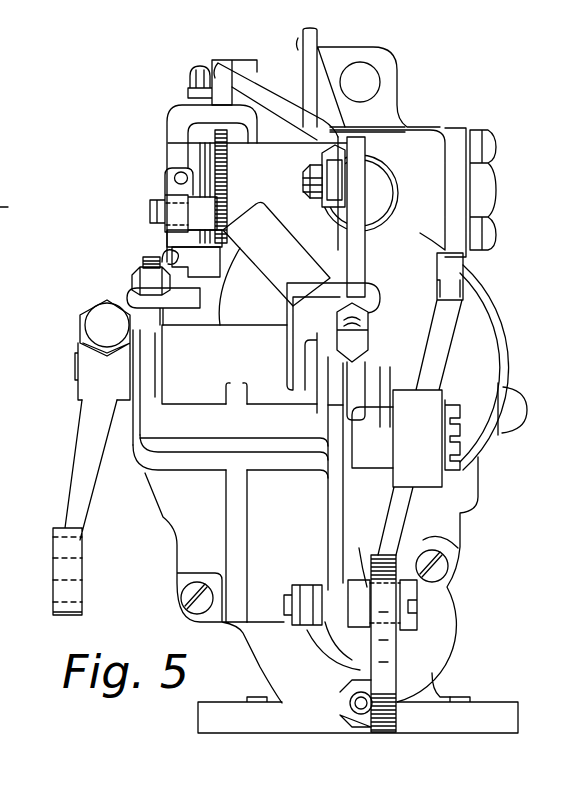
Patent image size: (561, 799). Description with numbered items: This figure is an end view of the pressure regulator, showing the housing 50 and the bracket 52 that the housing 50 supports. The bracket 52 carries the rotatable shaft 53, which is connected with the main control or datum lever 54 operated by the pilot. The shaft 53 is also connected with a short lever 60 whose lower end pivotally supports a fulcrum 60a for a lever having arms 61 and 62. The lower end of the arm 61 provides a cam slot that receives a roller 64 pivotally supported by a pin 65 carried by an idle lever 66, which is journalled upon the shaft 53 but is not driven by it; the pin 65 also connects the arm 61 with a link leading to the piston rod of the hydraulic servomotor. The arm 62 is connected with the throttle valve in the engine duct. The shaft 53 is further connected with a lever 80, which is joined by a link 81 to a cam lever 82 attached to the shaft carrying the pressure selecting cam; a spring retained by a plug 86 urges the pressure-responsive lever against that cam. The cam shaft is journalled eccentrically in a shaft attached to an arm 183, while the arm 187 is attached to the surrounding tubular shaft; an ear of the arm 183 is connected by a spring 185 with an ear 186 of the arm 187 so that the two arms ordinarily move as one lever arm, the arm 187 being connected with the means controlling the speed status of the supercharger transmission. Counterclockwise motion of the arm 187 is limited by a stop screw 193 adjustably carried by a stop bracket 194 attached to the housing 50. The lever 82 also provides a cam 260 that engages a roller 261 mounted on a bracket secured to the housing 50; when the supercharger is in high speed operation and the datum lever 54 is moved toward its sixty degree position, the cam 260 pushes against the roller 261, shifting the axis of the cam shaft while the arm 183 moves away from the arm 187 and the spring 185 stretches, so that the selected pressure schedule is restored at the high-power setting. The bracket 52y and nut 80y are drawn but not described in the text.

The housing 50 is at (441, 132).
The bracket 52 is at (176, 539).
The bracket arm 52y is at (375, 300).
The rotatable shaft 53 is at (75, 369).
The datum lever 54 is at (76, 464).
The short lever 60 is at (373, 466).
The fulcrum 60a is at (343, 440).
The lever arm 61 is at (398, 665).
The lever arm 62 is at (450, 323).
The roller 64 is at (361, 554).
The pin 65 is at (286, 603).
The idle lever 66 is at (327, 493).
The lever 80 is at (347, 252).
The nut 80y is at (368, 343).
The link 81 is at (327, 198).
The lever 82 is at (180, 120).
The plug 86 is at (398, 193).
The arm 183 is at (203, 161).
The spring 185 is at (162, 255).
The ear 186 is at (240, 246).
The arm 187 is at (212, 147).
The stop screw 193 is at (142, 262).
The stop bracket 194 is at (130, 290).
The cam 260 is at (167, 239).
The roller 261 is at (164, 196).